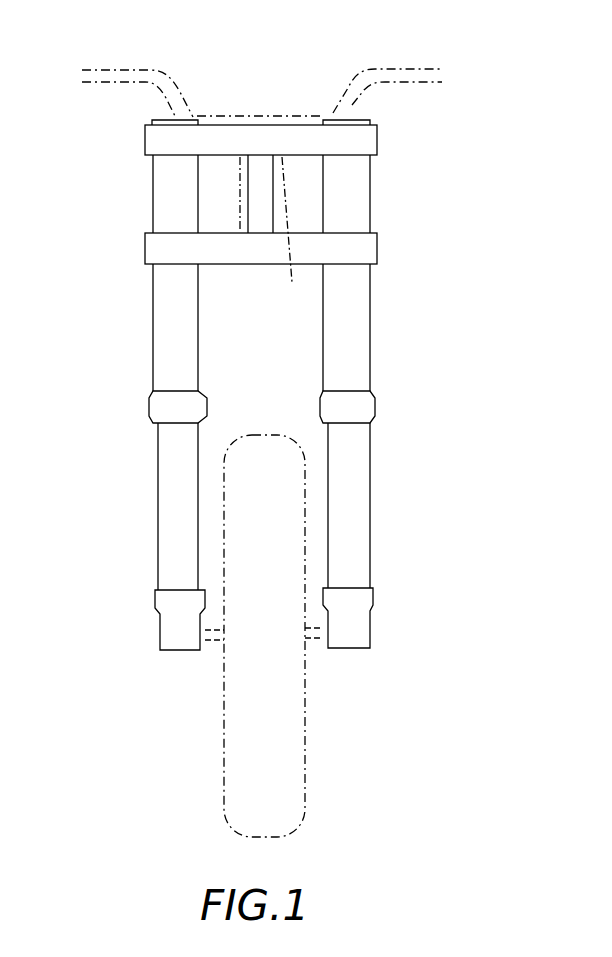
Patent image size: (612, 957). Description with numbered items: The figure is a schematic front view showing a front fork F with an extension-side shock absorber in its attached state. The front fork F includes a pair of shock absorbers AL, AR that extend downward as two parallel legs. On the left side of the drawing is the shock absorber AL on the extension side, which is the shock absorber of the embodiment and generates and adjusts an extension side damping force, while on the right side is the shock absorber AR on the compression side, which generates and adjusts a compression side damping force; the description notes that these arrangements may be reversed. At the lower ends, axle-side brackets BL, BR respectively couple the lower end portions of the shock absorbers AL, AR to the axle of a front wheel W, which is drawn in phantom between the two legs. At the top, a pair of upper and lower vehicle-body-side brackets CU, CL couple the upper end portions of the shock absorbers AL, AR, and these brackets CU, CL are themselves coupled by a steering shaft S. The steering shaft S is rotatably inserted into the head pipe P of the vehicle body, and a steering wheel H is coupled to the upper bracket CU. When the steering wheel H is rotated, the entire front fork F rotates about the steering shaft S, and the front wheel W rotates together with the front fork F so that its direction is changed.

The front fork F is at (126, 273).
The steering wheel H is at (128, 64).
The steering shaft S is at (252, 188).
The head pipe P is at (293, 235).
The upper vehicle-body-side bracket CU is at (370, 145).
The lower vehicle-body-side bracket CL is at (370, 245).
The shock absorber on extension side AL is at (160, 463).
The shock absorber on compression side AR is at (362, 458).
The axle-side bracket BL is at (164, 629).
The axle-side bracket BR is at (370, 628).
The front wheel W is at (240, 727).